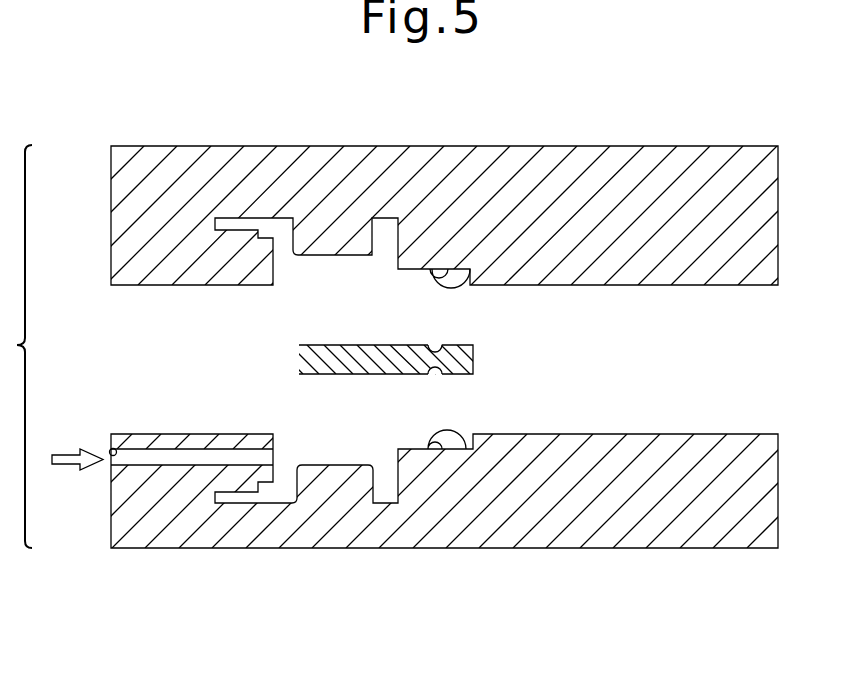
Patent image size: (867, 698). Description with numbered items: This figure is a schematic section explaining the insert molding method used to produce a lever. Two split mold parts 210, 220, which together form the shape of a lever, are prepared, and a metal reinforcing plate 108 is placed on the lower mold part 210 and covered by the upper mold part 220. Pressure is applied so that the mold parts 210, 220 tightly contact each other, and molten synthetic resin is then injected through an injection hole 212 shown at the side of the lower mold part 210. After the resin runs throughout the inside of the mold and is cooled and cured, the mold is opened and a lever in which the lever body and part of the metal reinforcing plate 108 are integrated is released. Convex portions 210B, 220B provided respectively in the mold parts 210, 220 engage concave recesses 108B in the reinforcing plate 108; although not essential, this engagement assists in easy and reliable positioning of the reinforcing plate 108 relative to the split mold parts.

The mold part 220 is at (651, 162).
The convex portion 220B is at (470, 285).
The mold part 210 is at (610, 528).
The convex portion 210B is at (466, 449).
The injection hole 212 is at (110, 449).
The metal reinforcing plate 108 is at (299, 358).
The concave recess 108B is at (434, 351).